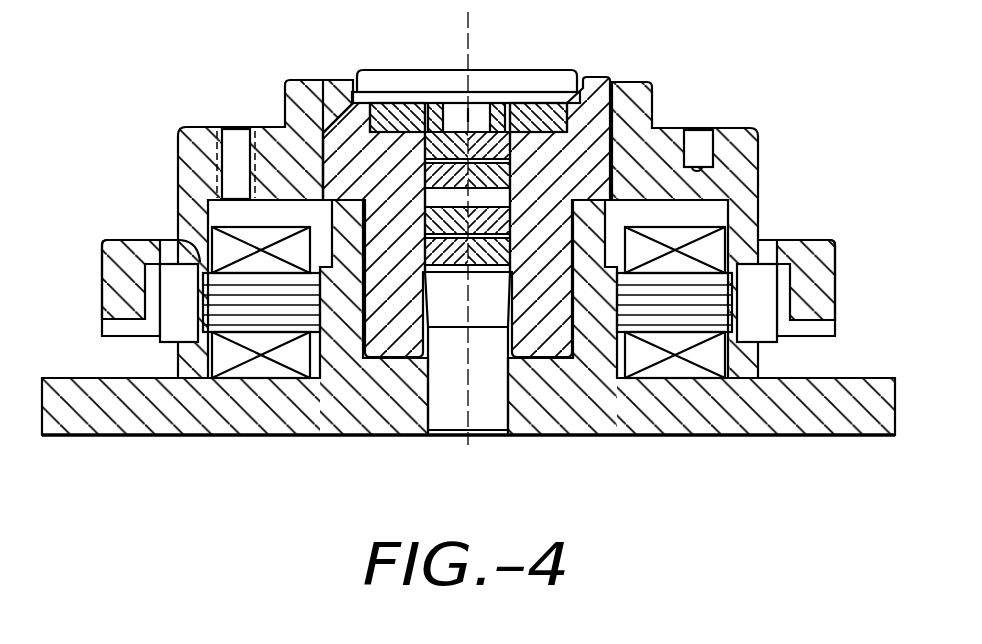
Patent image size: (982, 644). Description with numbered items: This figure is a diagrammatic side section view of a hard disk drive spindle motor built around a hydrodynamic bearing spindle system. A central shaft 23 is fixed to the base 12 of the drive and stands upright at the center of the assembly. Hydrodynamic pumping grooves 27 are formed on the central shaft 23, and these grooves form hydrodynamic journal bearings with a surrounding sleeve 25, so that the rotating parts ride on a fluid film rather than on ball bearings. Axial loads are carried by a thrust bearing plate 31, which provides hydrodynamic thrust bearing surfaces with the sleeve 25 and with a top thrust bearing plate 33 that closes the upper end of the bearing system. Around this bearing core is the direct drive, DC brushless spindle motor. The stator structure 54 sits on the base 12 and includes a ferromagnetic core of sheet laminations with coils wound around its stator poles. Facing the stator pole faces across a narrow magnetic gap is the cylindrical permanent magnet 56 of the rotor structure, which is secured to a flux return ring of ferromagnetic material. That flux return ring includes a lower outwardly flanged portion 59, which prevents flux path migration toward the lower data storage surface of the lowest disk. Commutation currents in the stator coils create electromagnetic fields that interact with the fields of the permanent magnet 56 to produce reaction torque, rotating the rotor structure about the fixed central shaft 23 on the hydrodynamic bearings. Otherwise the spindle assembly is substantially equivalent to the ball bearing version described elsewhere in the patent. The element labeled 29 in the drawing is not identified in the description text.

The base 12 is at (675, 420).
The central shaft 23 is at (492, 412).
The sleeve 25 is at (597, 80).
The hydrodynamic pumping grooves 27 is at (425, 235).
The housing 29 is at (752, 187).
The thrust bearing plate 31 is at (539, 105).
The top thrust bearing plate 33 is at (403, 95).
The stator structure 54 is at (203, 359).
The permanent magnet 56 is at (760, 336).
The lower outwardly flanged portion 59 is at (812, 334).